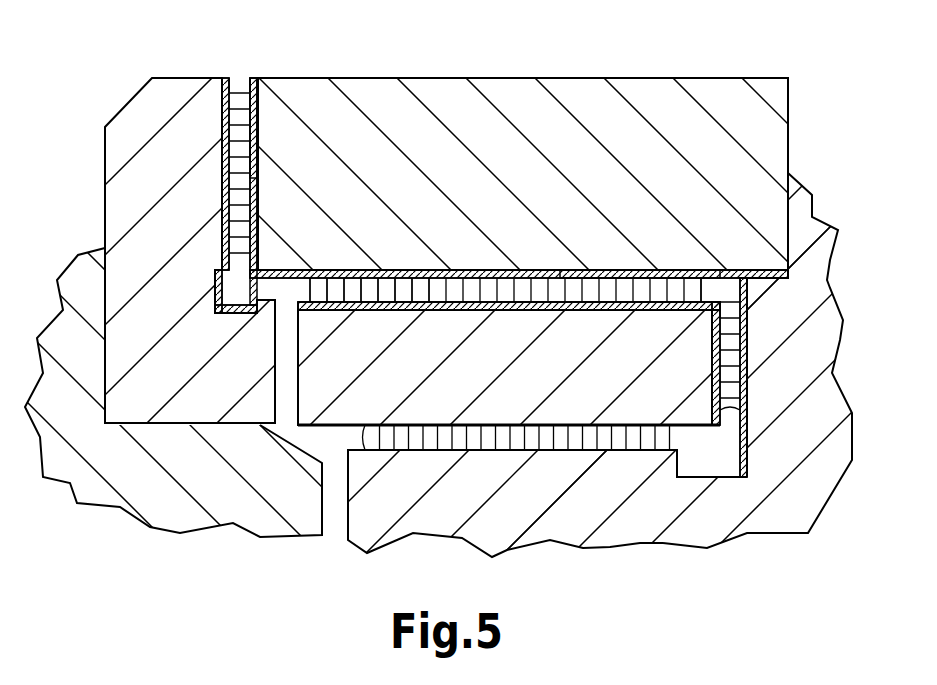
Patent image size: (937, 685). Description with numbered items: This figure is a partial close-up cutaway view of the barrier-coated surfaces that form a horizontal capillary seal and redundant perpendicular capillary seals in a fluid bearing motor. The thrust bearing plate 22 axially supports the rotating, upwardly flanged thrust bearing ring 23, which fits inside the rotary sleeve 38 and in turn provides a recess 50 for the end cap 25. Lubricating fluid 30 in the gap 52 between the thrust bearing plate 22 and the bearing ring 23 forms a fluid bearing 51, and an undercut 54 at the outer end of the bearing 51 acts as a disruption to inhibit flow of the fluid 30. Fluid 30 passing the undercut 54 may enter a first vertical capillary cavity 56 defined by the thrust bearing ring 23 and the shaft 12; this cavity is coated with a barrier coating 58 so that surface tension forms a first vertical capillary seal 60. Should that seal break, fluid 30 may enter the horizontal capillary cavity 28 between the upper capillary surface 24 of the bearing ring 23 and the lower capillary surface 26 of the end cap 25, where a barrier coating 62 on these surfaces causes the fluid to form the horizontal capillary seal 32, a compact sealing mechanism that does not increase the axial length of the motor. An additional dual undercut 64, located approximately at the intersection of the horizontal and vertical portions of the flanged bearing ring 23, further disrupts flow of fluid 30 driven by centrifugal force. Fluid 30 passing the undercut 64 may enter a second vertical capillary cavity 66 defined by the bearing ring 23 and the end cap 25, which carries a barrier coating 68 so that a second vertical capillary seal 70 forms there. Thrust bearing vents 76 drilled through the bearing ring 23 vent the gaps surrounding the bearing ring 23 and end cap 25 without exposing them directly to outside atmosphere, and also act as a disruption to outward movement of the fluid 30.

The shaft 12 is at (806, 328).
The thrust bearing plate 22 is at (533, 500).
The thrust bearing ring 23 is at (120, 212).
The upper capillary surface 24 is at (463, 307).
The end cap 25 is at (518, 108).
The lower capillary surface 26 is at (613, 278).
The horizontal capillary cavity 28 is at (538, 287).
The lubricating fluid 30 is at (220, 213).
The horizontal capillary seal 32 is at (422, 287).
The rotary sleeve 38 is at (178, 503).
The recess 50 is at (240, 92).
The fluid bearing 51 is at (432, 438).
The gap 52 is at (575, 442).
The undercut 54 is at (713, 478).
The first vertical capillary cavity 56 is at (713, 280).
The barrier coating 58 is at (715, 348).
The first vertical capillary seal 60 is at (730, 295).
The barrier coating 62 is at (485, 268).
The undercut 64 is at (230, 312).
The second vertical capillary cavity 66 is at (243, 181).
The barrier coating 68 is at (222, 112).
The second vertical capillary seal 70 is at (255, 122).
The thrust bearing vent 76 is at (287, 350).